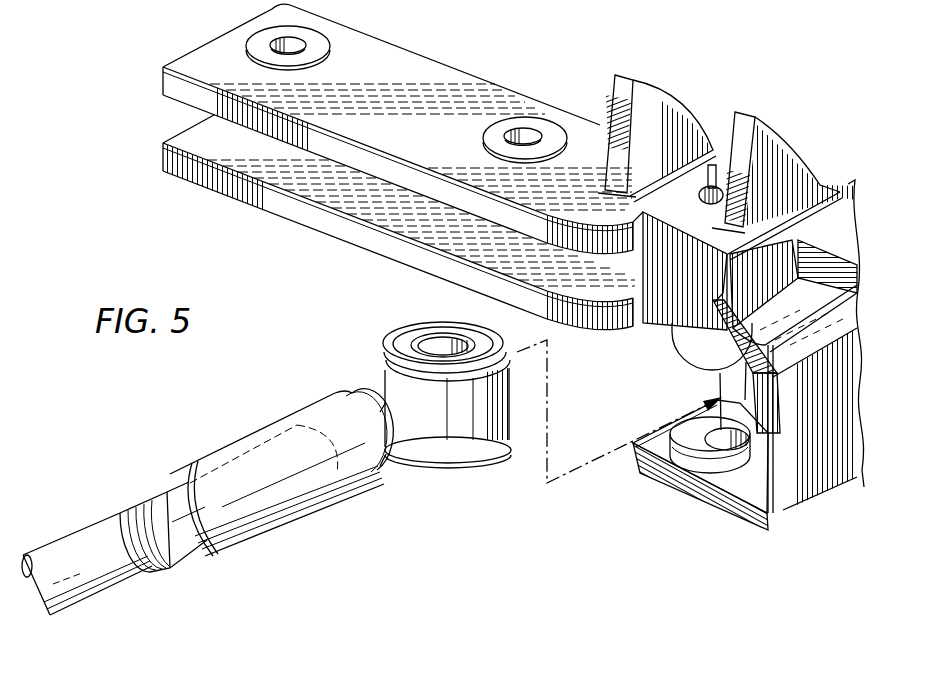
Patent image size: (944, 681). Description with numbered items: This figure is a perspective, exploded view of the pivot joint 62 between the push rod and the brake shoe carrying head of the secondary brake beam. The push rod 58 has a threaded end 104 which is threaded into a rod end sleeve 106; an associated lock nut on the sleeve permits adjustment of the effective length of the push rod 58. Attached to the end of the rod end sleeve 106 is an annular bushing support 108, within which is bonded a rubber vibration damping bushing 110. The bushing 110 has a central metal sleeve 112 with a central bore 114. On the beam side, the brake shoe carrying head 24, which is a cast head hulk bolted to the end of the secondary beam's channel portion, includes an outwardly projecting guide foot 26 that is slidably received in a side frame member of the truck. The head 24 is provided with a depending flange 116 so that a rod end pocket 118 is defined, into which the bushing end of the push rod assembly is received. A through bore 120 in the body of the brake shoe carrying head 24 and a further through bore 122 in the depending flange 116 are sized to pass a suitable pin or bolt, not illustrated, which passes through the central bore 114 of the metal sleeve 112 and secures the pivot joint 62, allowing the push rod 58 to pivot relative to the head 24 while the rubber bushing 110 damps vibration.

The brake shoe carrying head 24 is at (782, 482).
The guide feet 26 is at (857, 186).
The push rod 58 is at (106, 573).
The pivot joint 62 is at (449, 478).
The threaded end 104 is at (120, 520).
The rod end sleeve 106 is at (234, 447).
The annular bushing support 108 is at (491, 428).
The rubber vibration damping bushing 110 is at (388, 357).
The central metal sleeve 112 is at (424, 346).
The central bore 114 is at (418, 346).
The depending flange 116 is at (713, 484).
The rod end pocket 118 is at (667, 390).
The through bore 120 is at (714, 152).
The further through bore 122 is at (710, 440).